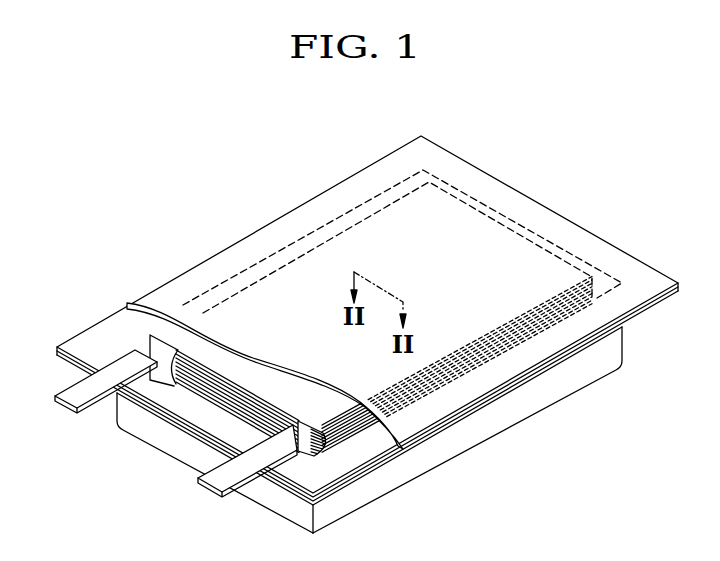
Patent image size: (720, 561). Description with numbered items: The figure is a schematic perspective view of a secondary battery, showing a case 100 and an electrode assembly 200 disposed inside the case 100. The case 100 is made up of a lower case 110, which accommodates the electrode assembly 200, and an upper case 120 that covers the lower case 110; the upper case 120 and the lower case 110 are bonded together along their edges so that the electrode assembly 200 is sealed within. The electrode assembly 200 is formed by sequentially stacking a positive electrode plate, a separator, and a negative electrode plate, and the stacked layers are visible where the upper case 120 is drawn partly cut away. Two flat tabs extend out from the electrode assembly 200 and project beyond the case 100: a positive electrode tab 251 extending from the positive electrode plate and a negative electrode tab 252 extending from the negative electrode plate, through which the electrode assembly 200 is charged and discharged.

The case 100 is at (367, 334).
The lower case 110 is at (493, 430).
The upper case 120 is at (547, 347).
The electrode assembly 200 is at (201, 340).
The positive electrode tab 251 is at (213, 482).
The negative electrode tab 252 is at (67, 400).